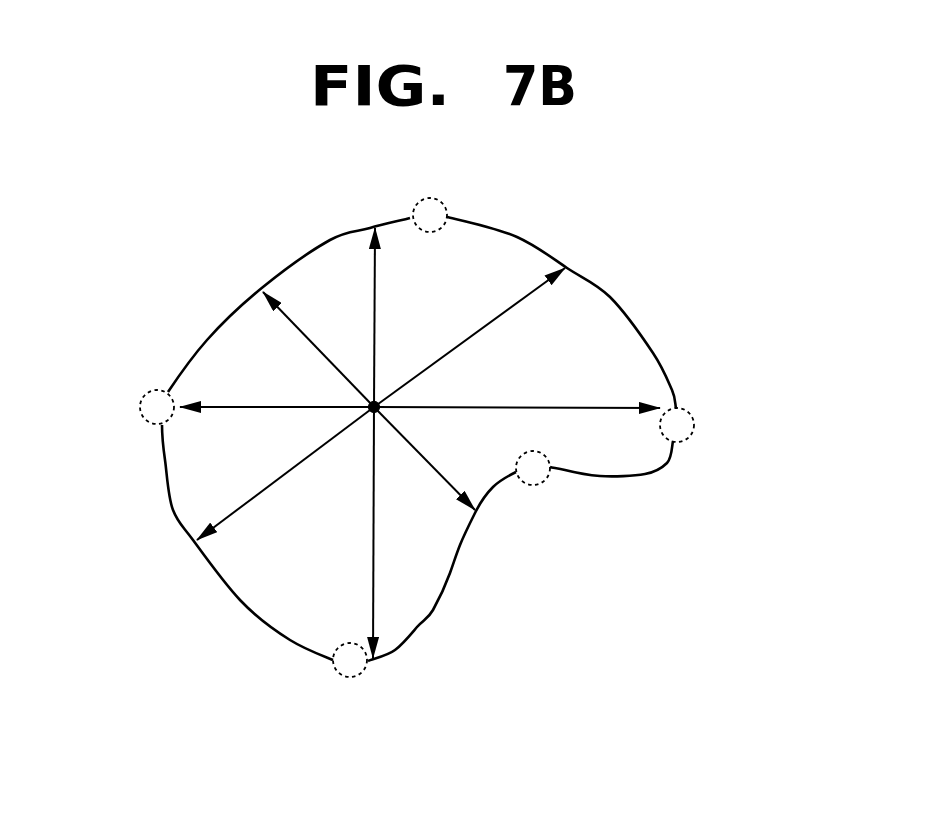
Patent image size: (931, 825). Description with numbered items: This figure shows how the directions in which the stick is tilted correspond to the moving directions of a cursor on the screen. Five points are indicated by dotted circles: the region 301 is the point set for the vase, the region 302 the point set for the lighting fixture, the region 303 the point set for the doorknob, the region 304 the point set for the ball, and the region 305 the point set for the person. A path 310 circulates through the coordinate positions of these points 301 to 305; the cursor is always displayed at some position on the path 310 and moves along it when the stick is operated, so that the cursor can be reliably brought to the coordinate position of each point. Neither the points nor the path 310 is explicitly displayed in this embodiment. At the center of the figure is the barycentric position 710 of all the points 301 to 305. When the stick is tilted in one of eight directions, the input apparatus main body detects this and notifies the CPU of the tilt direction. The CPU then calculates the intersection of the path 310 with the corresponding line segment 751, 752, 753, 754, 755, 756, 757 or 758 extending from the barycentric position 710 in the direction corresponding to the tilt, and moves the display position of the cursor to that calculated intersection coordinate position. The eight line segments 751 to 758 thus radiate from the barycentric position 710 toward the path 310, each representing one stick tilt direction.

The path 310 is at (608, 297).
The barycentric position 710 is at (377, 407).
The line segment 751 is at (370, 273).
The line segment 752 is at (317, 340).
The line segment 753 is at (263, 403).
The line segment 754 is at (243, 503).
The line segment 755 is at (373, 507).
The line segment 756 is at (413, 442).
The line segment 757 is at (462, 407).
The line segment 758 is at (432, 360).
The region 301 is at (695, 427).
The region 302 is at (443, 202).
The region 303 is at (155, 390).
The region 304 is at (337, 677).
The region 305 is at (538, 483).